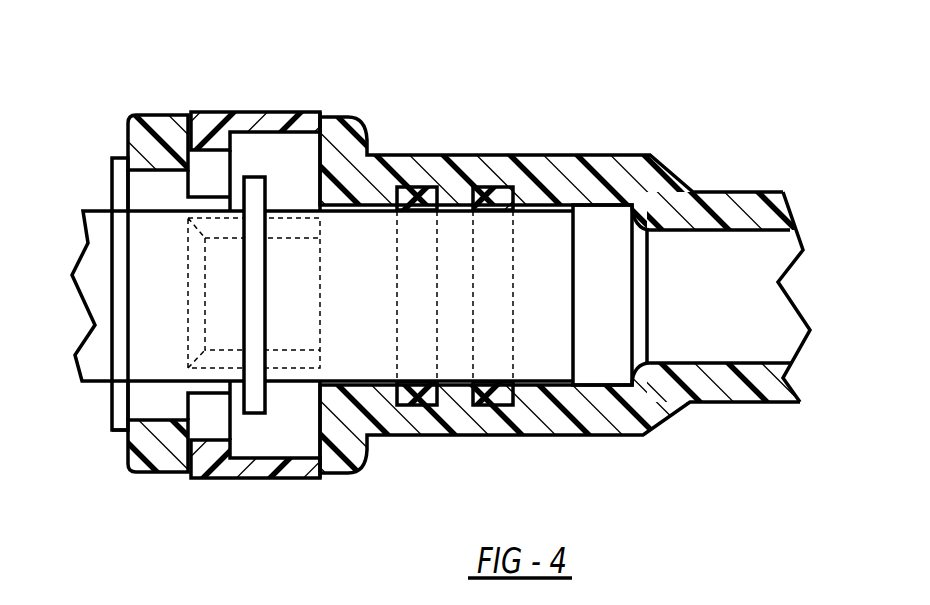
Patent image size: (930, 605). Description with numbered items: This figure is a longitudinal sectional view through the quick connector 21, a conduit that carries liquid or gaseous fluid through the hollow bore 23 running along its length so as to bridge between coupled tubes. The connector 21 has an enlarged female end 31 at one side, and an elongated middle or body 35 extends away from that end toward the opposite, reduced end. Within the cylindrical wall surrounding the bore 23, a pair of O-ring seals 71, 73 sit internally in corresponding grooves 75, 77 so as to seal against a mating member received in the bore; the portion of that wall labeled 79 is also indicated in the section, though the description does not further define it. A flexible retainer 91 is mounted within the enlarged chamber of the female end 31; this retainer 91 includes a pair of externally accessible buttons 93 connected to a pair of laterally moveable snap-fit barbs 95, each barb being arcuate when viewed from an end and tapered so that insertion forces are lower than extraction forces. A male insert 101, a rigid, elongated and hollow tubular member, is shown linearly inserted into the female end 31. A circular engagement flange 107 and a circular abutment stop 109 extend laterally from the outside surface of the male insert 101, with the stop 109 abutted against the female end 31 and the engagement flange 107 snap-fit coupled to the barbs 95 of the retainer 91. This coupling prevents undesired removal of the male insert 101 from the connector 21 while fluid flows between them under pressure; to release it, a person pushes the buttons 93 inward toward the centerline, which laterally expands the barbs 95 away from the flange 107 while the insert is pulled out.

The quick connector 21 is at (593, 98).
The hollow bore 23 is at (605, 240).
The female end 31 is at (128, 129).
The body 35 is at (737, 197).
The O-ring seal 71 is at (495, 192).
The O-ring seal 73 is at (417, 190).
The groove 75 is at (482, 407).
The groove 77 is at (410, 407).
The housing wall 79 is at (567, 427).
The flexible retainer 91 is at (288, 166).
The externally accessible buttons 93 is at (268, 120).
The snap-fit barbs 95 is at (217, 288).
The male insert 101 is at (150, 210).
The engagement flange 107 is at (252, 190).
The abutment stop 109 is at (120, 431).